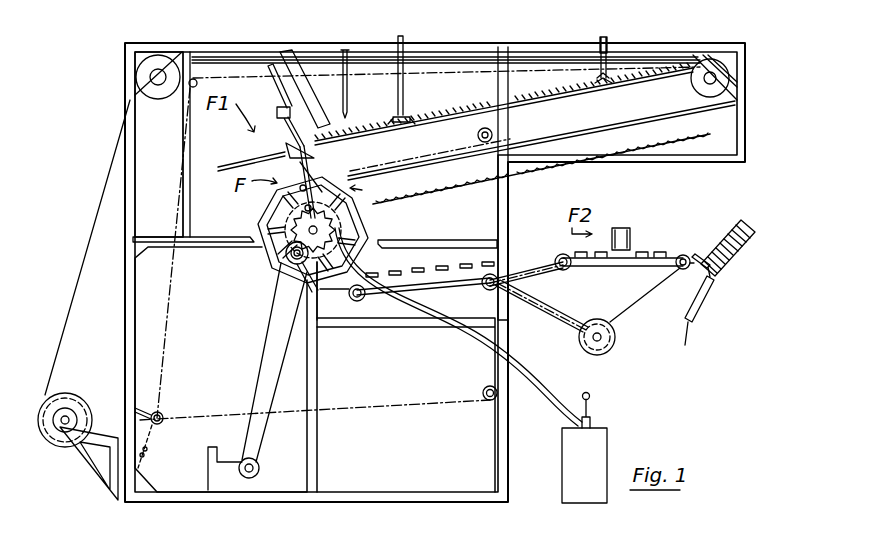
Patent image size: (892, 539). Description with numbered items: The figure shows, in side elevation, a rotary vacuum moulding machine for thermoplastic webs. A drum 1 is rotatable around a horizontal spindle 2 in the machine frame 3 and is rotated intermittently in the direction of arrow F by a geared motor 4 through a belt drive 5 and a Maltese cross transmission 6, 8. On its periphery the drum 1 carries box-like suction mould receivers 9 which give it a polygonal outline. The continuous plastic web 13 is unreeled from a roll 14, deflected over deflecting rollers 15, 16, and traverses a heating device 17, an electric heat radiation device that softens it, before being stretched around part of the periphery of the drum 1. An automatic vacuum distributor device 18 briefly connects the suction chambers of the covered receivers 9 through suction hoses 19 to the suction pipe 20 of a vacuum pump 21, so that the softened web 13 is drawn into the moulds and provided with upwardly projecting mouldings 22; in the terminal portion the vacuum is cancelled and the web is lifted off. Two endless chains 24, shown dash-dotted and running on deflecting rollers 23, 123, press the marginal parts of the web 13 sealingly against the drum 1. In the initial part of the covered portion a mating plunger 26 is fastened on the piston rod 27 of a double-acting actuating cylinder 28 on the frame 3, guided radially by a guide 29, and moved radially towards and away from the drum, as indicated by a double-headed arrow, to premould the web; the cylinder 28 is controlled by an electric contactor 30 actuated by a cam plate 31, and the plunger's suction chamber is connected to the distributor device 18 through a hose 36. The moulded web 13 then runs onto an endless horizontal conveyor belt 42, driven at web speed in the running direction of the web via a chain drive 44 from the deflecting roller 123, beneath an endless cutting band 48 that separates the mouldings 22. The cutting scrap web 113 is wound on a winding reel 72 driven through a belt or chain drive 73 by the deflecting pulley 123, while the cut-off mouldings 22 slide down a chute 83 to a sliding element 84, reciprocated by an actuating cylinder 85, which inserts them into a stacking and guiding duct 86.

The drum 1 is at (364, 191).
The horizontal spindle 2 is at (310, 228).
The machine frame 3 is at (318, 394).
The geared motor 4 is at (255, 482).
The belt drive 5 is at (262, 381).
The Maltese cross transmission 6 is at (290, 251).
The Maltese cross transmission 8 is at (290, 231).
The suction mould receiver 9 is at (272, 201).
The plastic web 13 is at (647, 122).
The roll 14 is at (62, 447).
The deflecting roller 15 is at (158, 93).
The deflecting roller 16 is at (702, 100).
The heating device 17 is at (458, 120).
The vacuum distributor device 18 is at (352, 212).
The suction pipes or hoses 19 is at (349, 270).
The suction pipe 20 is at (476, 341).
The vacuum pump 21 is at (562, 463).
The mouldings 22 is at (446, 262).
The deflecting roller 23 is at (196, 79).
The endless chains 24 is at (547, 126).
The mating plunger 26 is at (283, 151).
The piston rod 27 is at (270, 84).
The actuating cylinder 28 is at (308, 194).
The guide 29 is at (310, 80).
The electric contactor 30 is at (298, 264).
The cam plate 31 is at (296, 258).
The hose 36 is at (218, 168).
The conveyor belt 42 is at (601, 270).
The chain drive 44 is at (531, 280).
The cutting band 48 is at (620, 230).
The winding reel 72 is at (603, 353).
The belt or chain drive 73 is at (565, 326).
The chute 83 is at (700, 271).
The sliding element 84 is at (711, 286).
The actuating cylinder 85 is at (685, 345).
The stacking and guiding duct 86 is at (720, 246).
The cutting scrap web 113 is at (645, 324).
The deflecting roller 123 is at (486, 288).